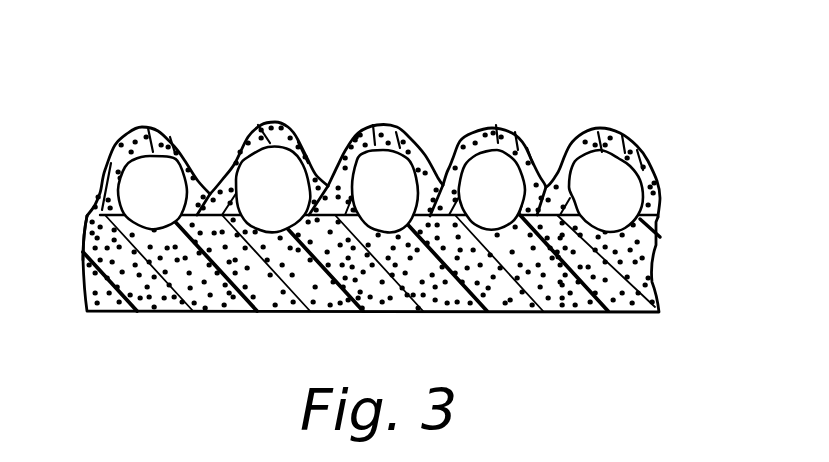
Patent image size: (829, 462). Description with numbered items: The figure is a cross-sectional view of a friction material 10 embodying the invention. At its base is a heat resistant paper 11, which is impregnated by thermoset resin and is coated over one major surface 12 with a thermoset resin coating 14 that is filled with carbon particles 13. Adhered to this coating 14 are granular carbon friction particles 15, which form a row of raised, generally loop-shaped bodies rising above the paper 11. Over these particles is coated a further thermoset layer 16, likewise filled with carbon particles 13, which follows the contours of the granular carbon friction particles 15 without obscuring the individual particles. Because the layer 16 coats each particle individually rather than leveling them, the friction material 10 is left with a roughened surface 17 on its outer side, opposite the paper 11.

The friction material 10 is at (288, 96).
The heat resistant paper 11 is at (651, 270).
The major surface 12 is at (660, 226).
The carbon particle 13 is at (112, 184).
The thermoset resin coating 14 is at (85, 227).
The granular carbon friction particles 15 is at (504, 163).
The thermoset layer 16 is at (117, 153).
The roughened surface 17 is at (461, 141).